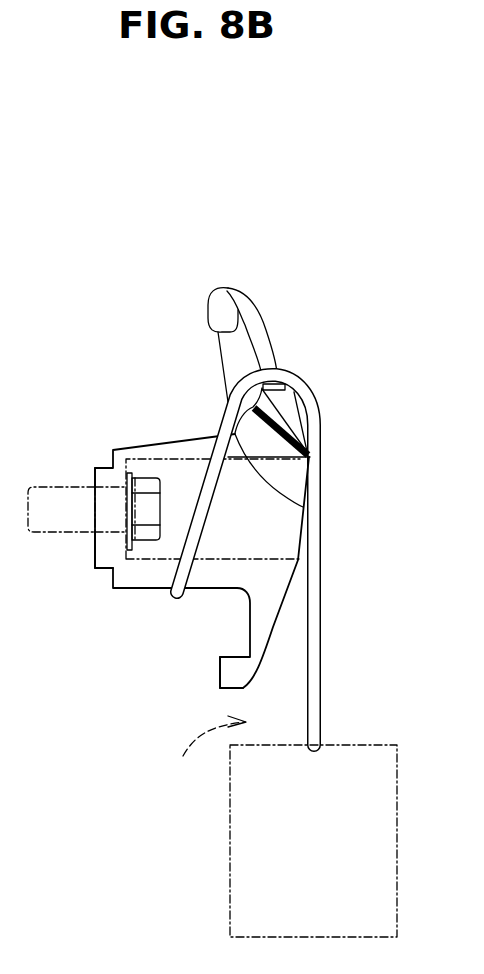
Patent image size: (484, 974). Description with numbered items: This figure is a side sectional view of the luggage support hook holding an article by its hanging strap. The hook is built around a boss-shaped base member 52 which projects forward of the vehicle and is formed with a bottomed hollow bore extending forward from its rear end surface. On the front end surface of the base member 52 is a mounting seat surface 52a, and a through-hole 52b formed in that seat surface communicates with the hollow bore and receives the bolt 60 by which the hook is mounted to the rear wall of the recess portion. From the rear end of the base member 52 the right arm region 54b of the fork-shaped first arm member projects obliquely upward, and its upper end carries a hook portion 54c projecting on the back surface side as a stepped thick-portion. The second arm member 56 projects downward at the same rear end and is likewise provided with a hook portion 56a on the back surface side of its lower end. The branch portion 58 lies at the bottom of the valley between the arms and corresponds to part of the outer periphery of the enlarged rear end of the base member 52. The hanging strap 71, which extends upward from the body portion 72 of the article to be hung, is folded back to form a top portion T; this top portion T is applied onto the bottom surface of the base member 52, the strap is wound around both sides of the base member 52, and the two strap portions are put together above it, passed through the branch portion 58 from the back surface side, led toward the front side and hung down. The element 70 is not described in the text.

The base member 52 is at (158, 447).
The mounting seat surface 52a is at (97, 550).
The through-hole 52b is at (107, 486).
The right arm region 54b is at (259, 268).
The hook portion 54c is at (209, 310).
The second arm member 56 is at (258, 638).
The hook portion 56a is at (220, 673).
The branch portion 58 is at (282, 384).
The bolt 60 is at (147, 511).
The direction arrow 70 is at (198, 750).
The hanging strap 71 is at (313, 612).
The body portion 72 is at (252, 883).
The top portion T is at (168, 603).